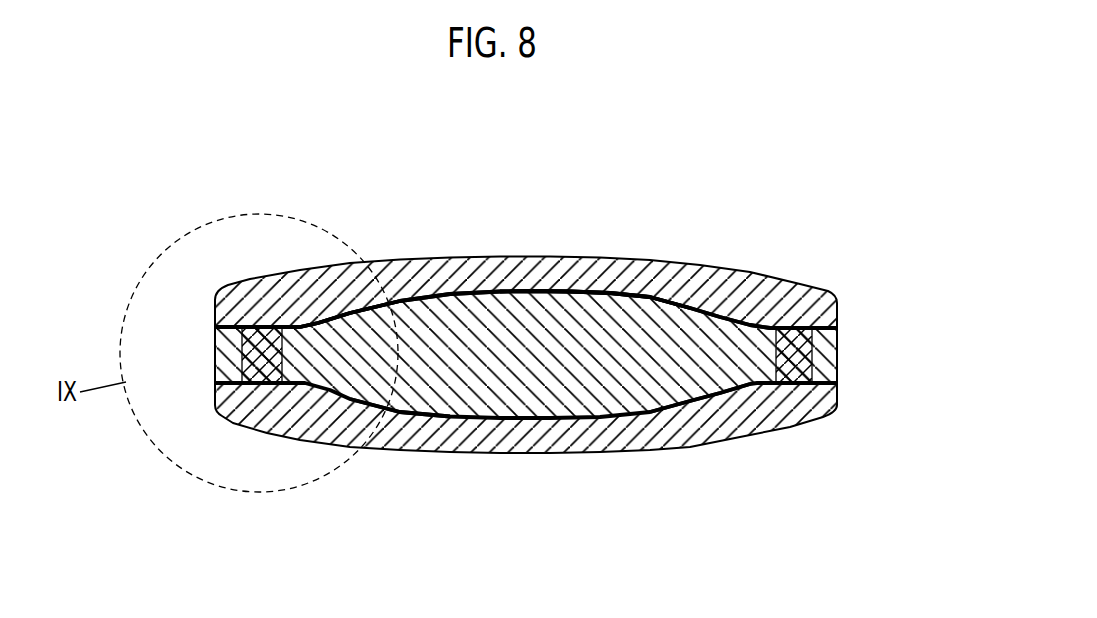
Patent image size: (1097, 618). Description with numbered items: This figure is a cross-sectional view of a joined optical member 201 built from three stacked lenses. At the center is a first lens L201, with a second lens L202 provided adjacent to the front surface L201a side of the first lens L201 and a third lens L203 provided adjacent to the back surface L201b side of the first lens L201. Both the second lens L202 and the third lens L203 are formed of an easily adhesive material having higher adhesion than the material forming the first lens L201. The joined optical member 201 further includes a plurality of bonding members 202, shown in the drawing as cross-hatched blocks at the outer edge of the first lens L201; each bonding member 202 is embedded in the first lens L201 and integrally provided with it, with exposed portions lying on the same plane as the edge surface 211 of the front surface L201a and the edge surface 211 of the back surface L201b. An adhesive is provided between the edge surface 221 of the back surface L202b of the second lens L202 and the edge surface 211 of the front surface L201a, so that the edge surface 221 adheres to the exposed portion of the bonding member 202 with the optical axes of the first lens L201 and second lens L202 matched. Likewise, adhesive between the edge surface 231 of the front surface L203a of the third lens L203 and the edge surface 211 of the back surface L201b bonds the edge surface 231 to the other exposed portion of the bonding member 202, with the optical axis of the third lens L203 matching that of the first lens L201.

The joined optical member 201 is at (832, 112).
The first lens L201 is at (838, 354).
The second lens L202 is at (838, 302).
The third lens L203 is at (838, 405).
The bonding member 202 is at (238, 350).
The edge surface 211 is at (772, 326).
The edge surface 221 is at (282, 384).
The edge surface 231 is at (778, 363).
The front surface L201a is at (655, 296).
The back surface L201b is at (382, 417).
The back surface L202b is at (318, 323).
The front surface L203a is at (722, 393).